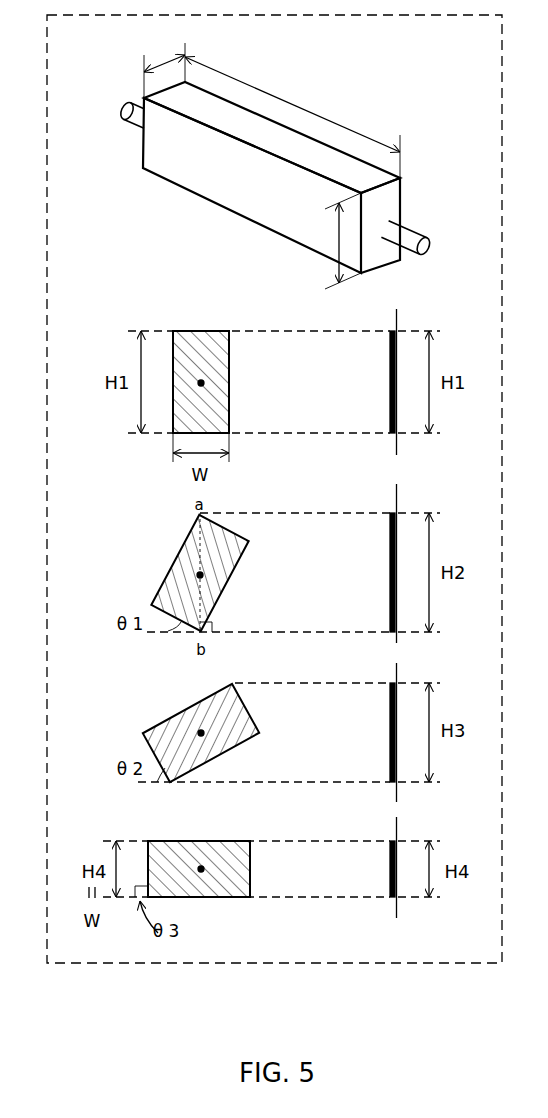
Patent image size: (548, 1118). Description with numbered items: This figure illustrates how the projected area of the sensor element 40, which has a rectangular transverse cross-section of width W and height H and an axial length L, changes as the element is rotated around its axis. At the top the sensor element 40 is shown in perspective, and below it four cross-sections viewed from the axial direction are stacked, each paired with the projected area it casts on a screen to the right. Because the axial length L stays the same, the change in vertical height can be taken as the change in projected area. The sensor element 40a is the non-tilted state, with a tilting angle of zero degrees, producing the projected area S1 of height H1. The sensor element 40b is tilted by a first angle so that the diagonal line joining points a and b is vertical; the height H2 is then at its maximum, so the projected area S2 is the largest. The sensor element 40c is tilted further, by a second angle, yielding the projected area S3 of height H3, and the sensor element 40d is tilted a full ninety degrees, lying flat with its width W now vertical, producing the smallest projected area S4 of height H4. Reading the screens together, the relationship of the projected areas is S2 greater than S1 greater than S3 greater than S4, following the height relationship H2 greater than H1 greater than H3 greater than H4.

The sensor element 40 is at (233, 200).
The sensor element in non-tilted state 40a is at (200, 331).
The sensor element tilted at angle θ1 40b is at (178, 553).
The sensor element tilted at angle θ2 40c is at (185, 710).
The sensor element tilted at angle θ3 40d is at (203, 841).
The projected area S1 is at (390, 387).
The projected area S2 is at (390, 575).
The projected area S3 is at (390, 732).
The projected area S4 is at (390, 872).